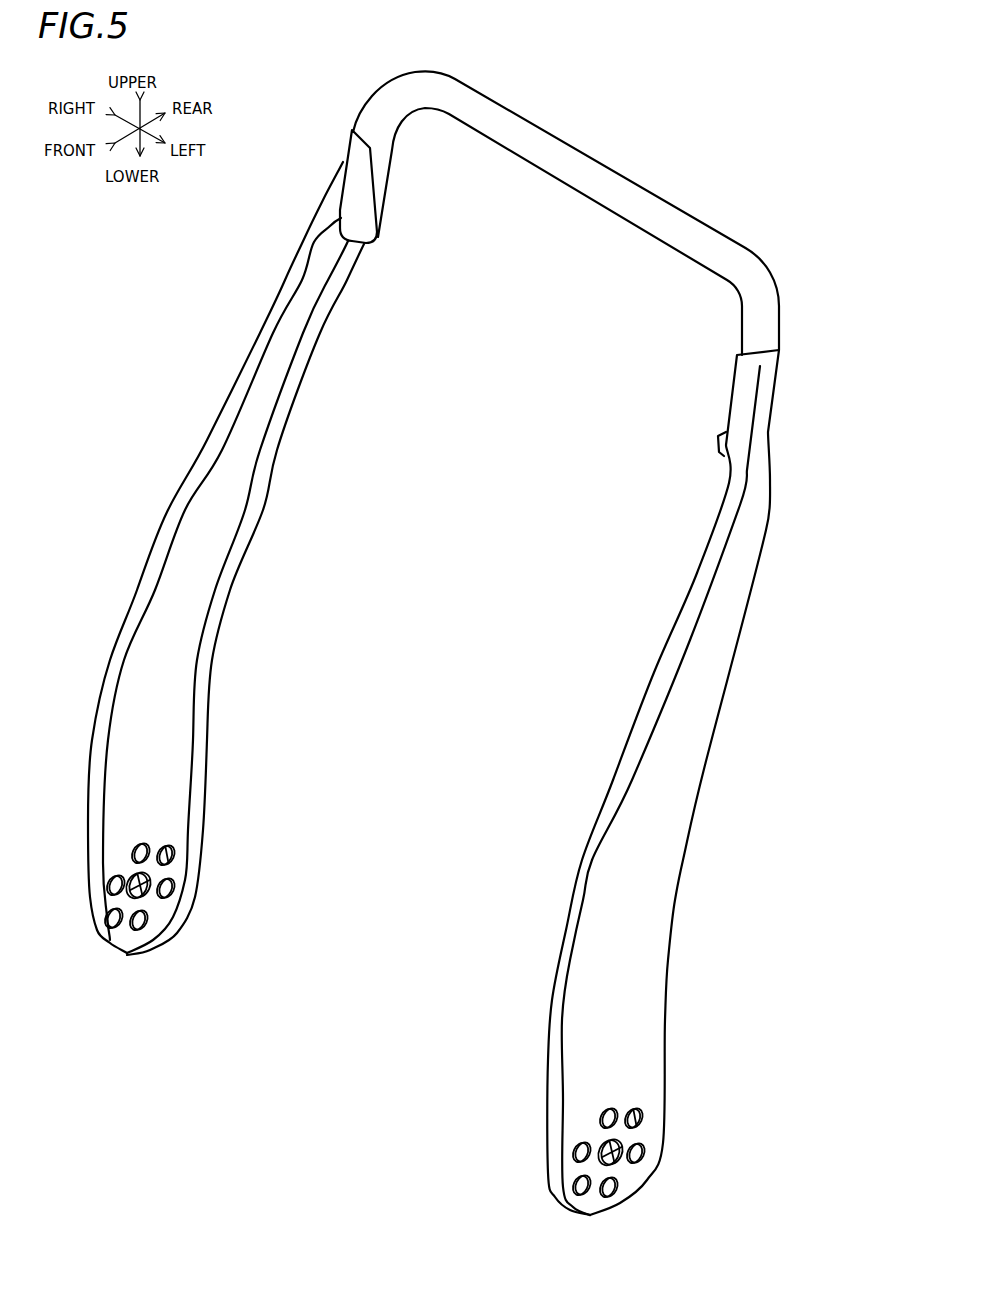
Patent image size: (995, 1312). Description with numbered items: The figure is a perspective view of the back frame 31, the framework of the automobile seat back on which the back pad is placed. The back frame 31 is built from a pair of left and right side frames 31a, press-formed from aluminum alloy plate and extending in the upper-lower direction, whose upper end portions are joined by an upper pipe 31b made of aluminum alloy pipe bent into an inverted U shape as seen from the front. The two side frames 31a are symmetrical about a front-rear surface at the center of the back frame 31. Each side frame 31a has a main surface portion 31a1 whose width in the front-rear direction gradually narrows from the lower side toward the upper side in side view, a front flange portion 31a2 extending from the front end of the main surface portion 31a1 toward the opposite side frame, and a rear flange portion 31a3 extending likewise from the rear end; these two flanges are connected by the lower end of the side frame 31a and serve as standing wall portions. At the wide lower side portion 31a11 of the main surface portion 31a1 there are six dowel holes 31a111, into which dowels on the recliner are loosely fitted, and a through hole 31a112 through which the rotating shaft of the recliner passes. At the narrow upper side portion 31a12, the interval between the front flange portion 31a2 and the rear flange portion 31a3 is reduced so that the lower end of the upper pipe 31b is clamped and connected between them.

The back frame 31 is at (146, 356).
The upper pipe 31b is at (598, 172).
The side frame 31a is at (140, 590).
The main surface portion 31a1 is at (205, 545).
The front flange portion 31a2 is at (693, 573).
The rear flange portion 31a3 is at (258, 477).
The lower side portion 31a11 is at (153, 833).
The dowel hole 31a111 is at (170, 862).
The through hole 31a112 is at (142, 898).
The upper side portion 31a12 is at (342, 158).